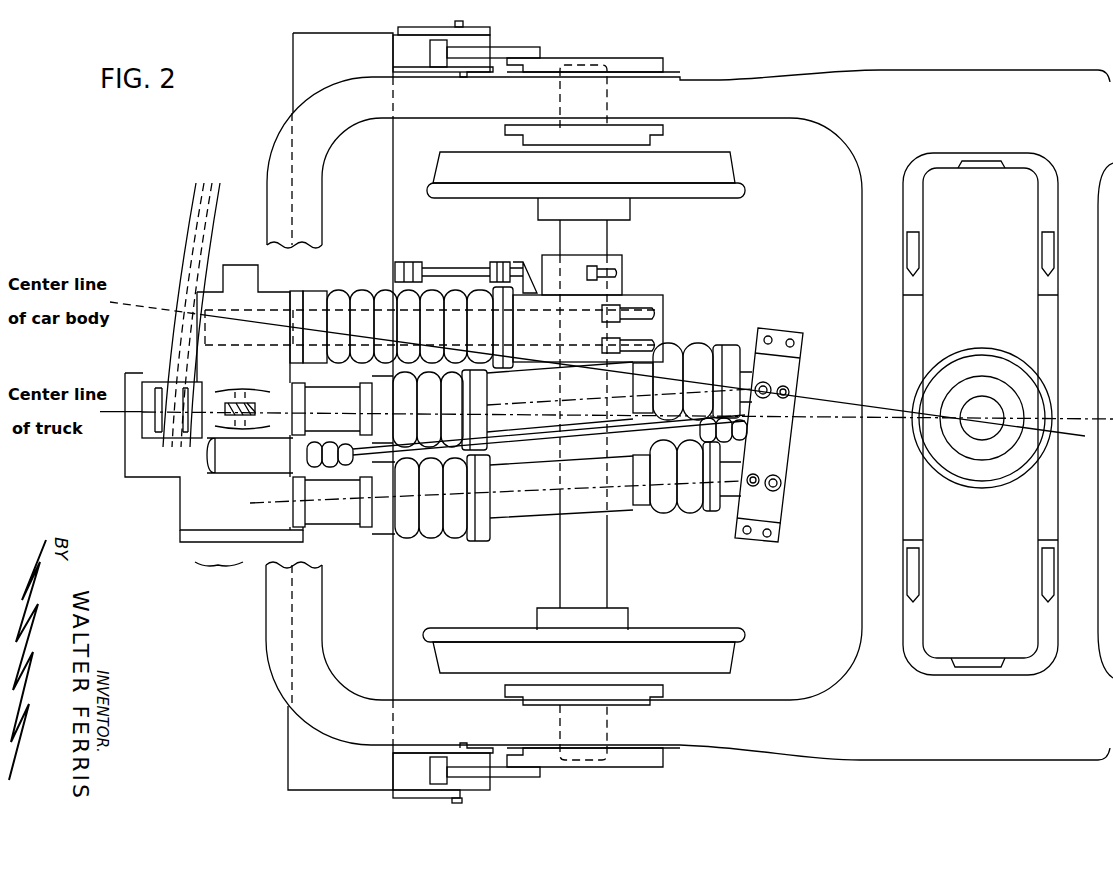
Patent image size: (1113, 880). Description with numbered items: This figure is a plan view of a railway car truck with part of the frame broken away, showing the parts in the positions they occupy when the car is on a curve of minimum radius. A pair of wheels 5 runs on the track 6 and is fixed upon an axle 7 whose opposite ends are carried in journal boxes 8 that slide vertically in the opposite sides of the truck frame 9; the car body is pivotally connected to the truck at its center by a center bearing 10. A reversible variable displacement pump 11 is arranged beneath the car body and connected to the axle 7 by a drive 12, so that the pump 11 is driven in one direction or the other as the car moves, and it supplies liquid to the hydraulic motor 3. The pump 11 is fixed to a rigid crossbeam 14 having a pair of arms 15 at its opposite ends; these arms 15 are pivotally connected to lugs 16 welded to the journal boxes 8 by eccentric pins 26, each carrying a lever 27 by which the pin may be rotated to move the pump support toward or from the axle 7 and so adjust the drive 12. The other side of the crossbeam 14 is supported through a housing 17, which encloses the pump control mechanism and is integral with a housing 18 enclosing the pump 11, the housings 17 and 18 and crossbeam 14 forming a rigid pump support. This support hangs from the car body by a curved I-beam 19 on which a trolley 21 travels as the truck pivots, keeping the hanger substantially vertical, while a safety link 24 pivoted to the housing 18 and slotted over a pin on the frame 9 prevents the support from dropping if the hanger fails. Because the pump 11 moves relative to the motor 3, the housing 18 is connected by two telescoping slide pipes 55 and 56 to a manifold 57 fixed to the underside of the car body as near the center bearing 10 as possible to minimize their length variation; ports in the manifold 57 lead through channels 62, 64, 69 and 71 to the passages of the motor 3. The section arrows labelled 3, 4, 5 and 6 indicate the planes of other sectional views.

The hydraulic motor 3 is at (254, 495).
The connecting rod (section 4-4) 4 is at (633, 482).
The wheels 5 is at (646, 179).
The track 6 is at (622, 406).
The axle 7 is at (591, 572).
The journal boxes 8 is at (623, 66).
The frame 9 is at (898, 714).
The center bearing 10 is at (943, 373).
The reversible variable displacement pump 11 is at (219, 581).
The drive 12 is at (347, 305).
The crossbeam 14 is at (363, 606).
The arms 15 is at (422, 61).
The lugs 16 is at (520, 53).
The housing 17 is at (147, 460).
The housing 18 is at (195, 507).
The I-beam 19 is at (197, 195).
The trolley 21 is at (147, 375).
The link 24 is at (247, 403).
The eccentric pins 26 is at (465, 77).
The lever 27 is at (465, 33).
The slide pipe 55 is at (628, 500).
The slide pipe 56 is at (702, 358).
The manifold 57 is at (758, 537).
The channel 62 is at (778, 489).
The channel 64 is at (756, 494).
The channel 69 is at (775, 373).
The channel 71 is at (785, 388).